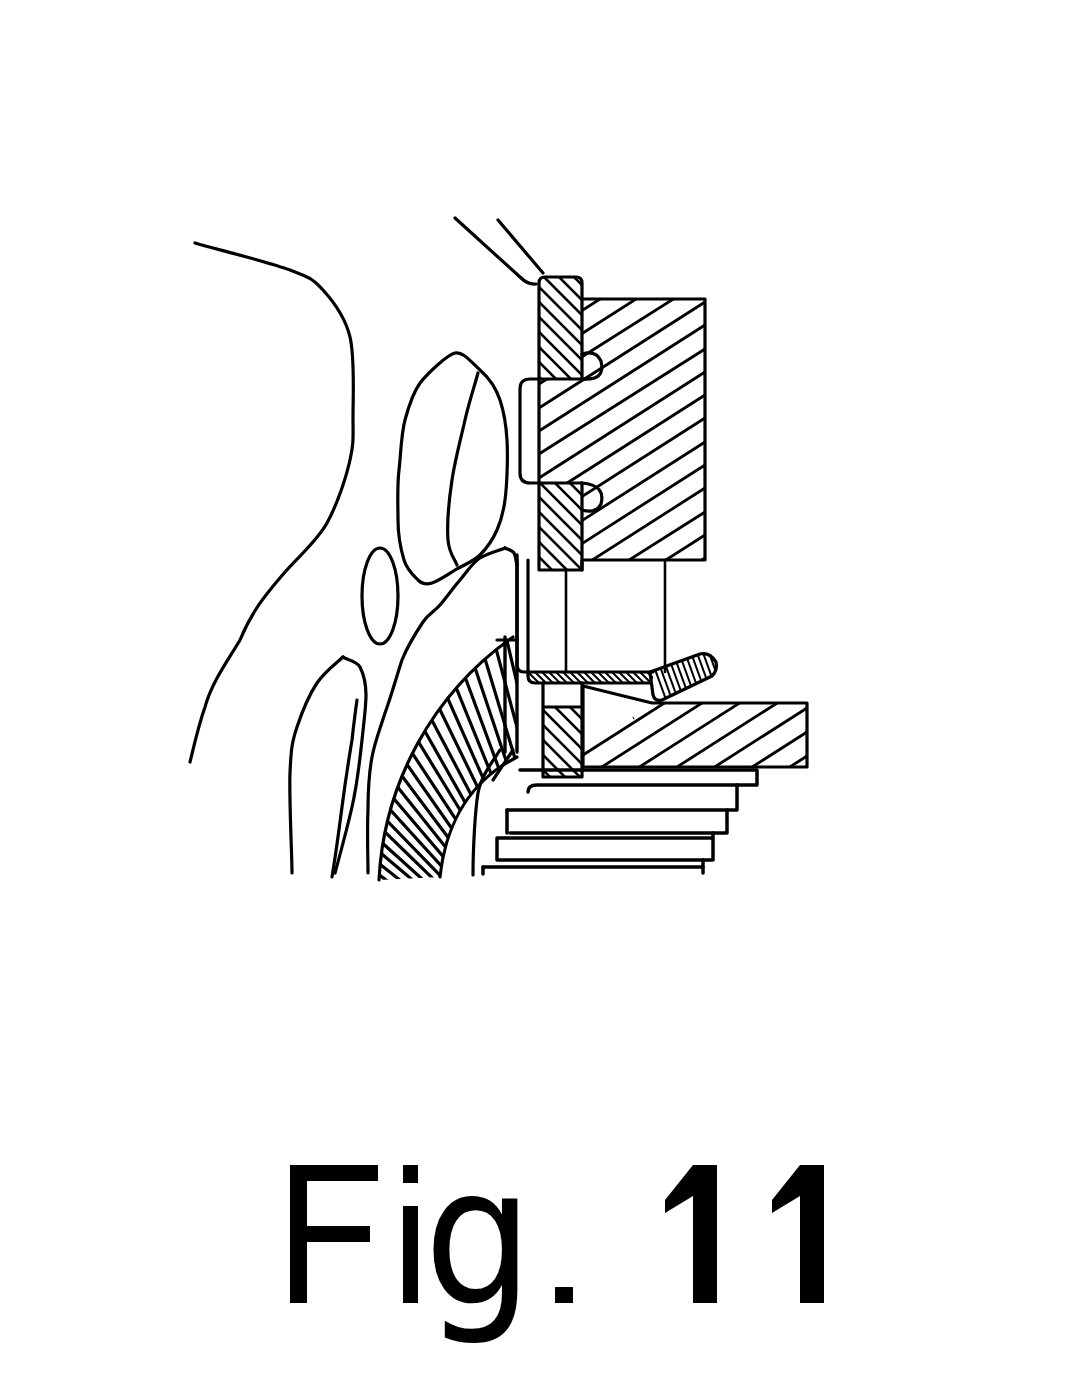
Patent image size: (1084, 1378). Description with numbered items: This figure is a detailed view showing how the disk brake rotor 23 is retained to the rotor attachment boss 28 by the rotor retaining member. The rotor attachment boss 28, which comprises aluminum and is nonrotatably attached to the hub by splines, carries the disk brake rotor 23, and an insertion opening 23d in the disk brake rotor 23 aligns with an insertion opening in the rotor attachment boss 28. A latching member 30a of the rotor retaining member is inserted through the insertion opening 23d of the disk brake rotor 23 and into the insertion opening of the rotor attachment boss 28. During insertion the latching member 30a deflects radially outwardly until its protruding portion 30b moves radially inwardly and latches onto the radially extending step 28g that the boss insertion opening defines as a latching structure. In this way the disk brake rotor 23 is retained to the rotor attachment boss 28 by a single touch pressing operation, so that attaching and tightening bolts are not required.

The disk brake rotor 23 is at (423, 165).
The insertion opening 23d is at (530, 607).
The rotor attachment boss 28 is at (715, 430).
The step 28g is at (633, 717).
The latching member 30a is at (622, 660).
The protruding portion 30b is at (690, 663).